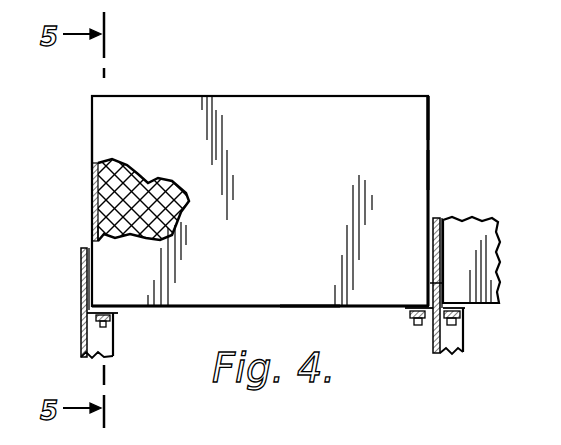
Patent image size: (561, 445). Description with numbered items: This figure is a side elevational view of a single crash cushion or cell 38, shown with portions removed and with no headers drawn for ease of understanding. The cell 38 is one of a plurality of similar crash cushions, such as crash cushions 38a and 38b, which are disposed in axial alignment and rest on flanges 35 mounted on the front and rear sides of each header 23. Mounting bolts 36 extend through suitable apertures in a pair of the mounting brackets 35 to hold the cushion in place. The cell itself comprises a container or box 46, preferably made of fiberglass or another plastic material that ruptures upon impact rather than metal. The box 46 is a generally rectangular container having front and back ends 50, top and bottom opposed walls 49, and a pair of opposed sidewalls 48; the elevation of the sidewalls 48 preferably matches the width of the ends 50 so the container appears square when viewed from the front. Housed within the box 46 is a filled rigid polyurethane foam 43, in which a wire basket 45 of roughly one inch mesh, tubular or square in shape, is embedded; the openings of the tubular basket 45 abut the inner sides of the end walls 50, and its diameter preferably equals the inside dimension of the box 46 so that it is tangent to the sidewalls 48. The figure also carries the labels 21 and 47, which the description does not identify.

The frame member 21 is at (105, 357).
The header 23 is at (81, 290).
The flange 35 is at (116, 315).
The mounting bolt 36 is at (108, 327).
The crash cushion 38 is at (362, 82).
The crash cushion 38a is at (436, 126).
The crash cushion 38b is at (496, 228).
The urethane foam 43 is at (98, 201).
The basket 45 is at (98, 182).
The box 46 is at (161, 88).
The inner skin 47 is at (98, 238).
The sidewall 48 is at (292, 218).
The top and bottom wall 49 is at (301, 93).
The end wall 50 is at (92, 144).